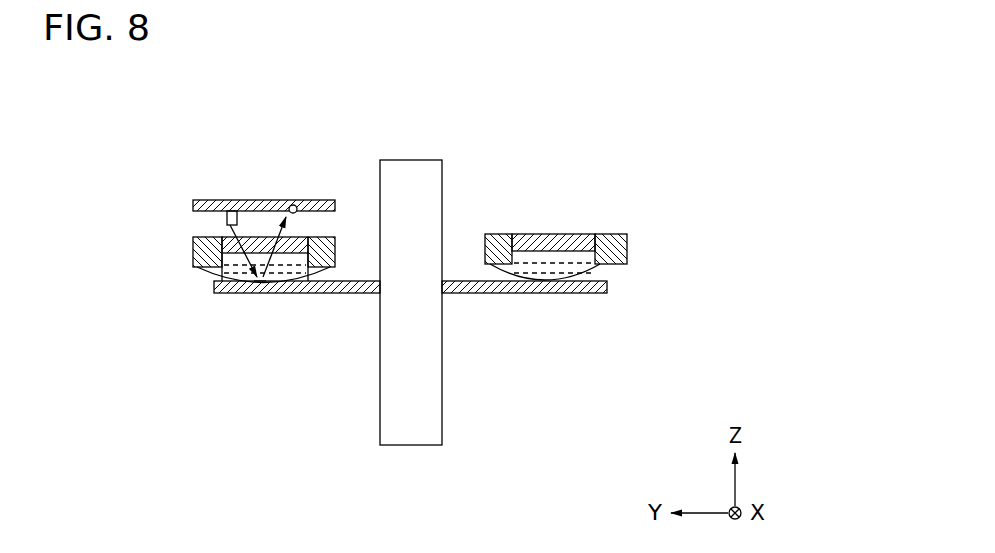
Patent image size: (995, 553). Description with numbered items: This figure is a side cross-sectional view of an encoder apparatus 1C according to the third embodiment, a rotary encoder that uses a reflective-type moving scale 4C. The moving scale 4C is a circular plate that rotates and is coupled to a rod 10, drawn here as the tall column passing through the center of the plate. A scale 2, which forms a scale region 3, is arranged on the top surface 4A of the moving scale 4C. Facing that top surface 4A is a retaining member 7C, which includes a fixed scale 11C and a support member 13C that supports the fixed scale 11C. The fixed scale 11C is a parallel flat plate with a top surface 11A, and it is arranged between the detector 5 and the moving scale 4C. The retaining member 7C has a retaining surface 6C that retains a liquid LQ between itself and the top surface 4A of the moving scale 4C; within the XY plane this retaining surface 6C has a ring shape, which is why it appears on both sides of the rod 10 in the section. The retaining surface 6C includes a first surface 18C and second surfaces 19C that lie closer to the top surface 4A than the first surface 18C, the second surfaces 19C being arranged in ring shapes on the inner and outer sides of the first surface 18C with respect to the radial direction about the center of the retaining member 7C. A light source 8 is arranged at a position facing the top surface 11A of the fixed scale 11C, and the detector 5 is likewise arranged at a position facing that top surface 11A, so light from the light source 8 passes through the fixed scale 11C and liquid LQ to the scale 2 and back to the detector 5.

The encoder apparatus 1C is at (583, 140).
The scale 2 is at (297, 292).
The scale region 3 is at (259, 294).
The top surface 4A is at (343, 280).
The moving scale 4C is at (470, 278).
The detector 5 is at (293, 205).
The retaining surface 6C is at (257, 366).
The retaining member 7C is at (226, 226).
The light source 8 is at (213, 200).
The rod 10 is at (442, 178).
The top surface 11A is at (260, 278).
The fixed scale 11C is at (303, 237).
The support member 13C is at (192, 256).
The first surface 18C is at (222, 263).
The second surfaces 19C is at (192, 267).
The liquid LQ is at (284, 281).